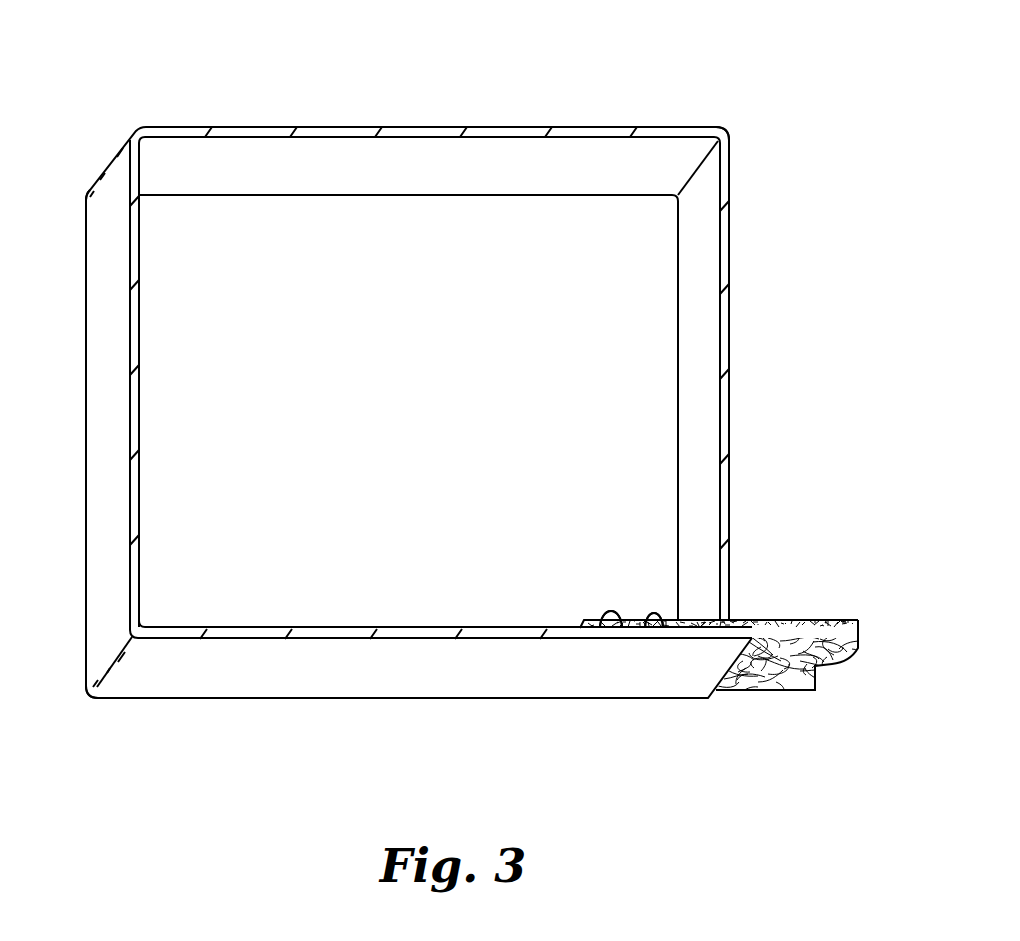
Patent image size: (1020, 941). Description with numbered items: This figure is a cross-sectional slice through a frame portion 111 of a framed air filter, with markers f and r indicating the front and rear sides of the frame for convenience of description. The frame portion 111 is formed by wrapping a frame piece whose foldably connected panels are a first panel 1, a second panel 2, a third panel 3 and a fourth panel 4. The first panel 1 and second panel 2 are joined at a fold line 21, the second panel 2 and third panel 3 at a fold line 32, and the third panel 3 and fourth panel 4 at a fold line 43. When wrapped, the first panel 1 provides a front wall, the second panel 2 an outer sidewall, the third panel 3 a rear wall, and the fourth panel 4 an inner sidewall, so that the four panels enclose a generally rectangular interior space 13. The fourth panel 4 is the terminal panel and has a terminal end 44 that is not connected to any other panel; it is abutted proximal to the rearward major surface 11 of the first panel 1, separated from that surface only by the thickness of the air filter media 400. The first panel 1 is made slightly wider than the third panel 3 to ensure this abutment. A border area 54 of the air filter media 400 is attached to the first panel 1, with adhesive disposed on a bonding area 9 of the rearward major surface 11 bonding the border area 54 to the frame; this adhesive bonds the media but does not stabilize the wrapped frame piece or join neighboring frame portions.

The first panel 1 is at (280, 684).
The second panel 2 is at (97, 472).
The third panel 3 is at (335, 127).
The fourth panel 4 is at (727, 398).
The bonding area 9 is at (663, 628).
The rearward major surface 11 is at (622, 628).
The interior space 13 is at (327, 360).
The fold line 21 is at (100, 690).
The fold line 32 is at (100, 176).
The fold line 43 is at (726, 118).
The terminal end 44 is at (730, 620).
The border area 54 is at (665, 622).
The frame portion 111 is at (765, 60).
The air filter media 400 is at (812, 668).
The rear side marker r is at (474, 92).
The front side marker f is at (462, 755).